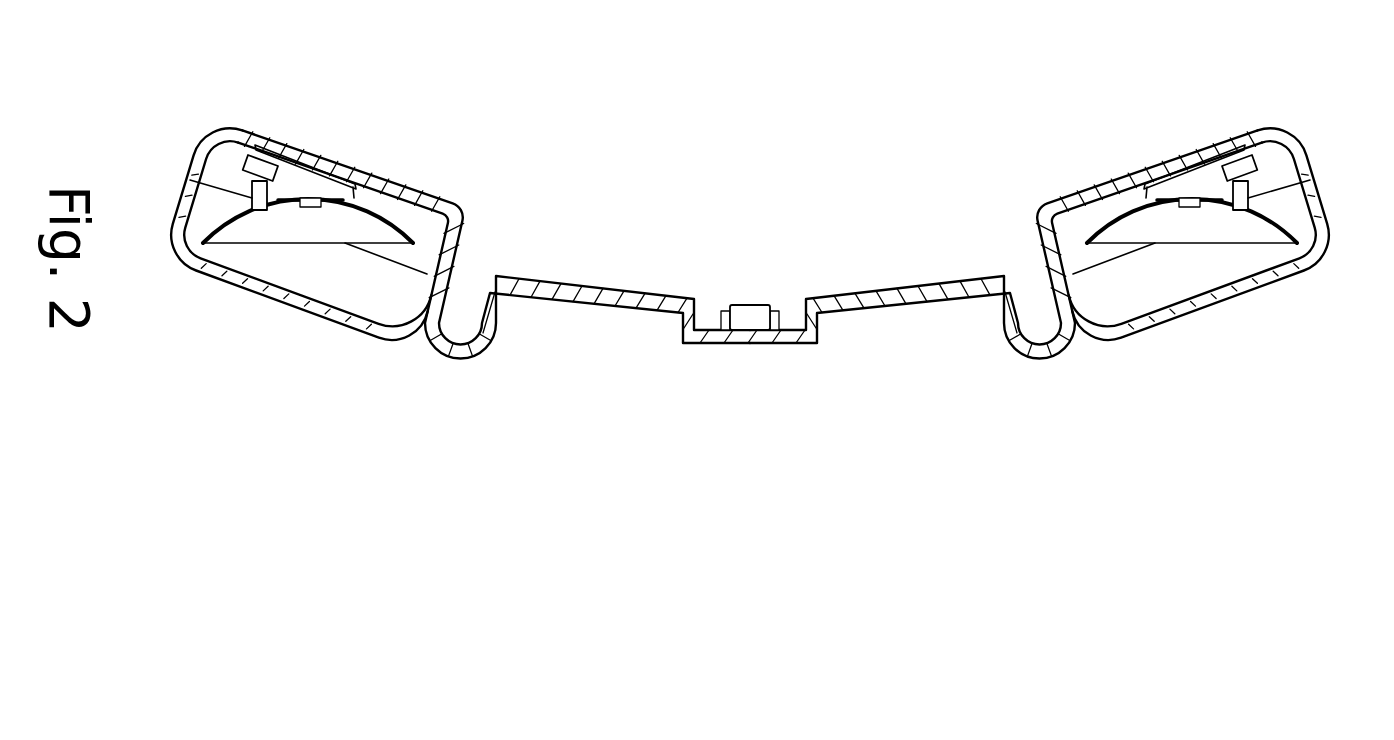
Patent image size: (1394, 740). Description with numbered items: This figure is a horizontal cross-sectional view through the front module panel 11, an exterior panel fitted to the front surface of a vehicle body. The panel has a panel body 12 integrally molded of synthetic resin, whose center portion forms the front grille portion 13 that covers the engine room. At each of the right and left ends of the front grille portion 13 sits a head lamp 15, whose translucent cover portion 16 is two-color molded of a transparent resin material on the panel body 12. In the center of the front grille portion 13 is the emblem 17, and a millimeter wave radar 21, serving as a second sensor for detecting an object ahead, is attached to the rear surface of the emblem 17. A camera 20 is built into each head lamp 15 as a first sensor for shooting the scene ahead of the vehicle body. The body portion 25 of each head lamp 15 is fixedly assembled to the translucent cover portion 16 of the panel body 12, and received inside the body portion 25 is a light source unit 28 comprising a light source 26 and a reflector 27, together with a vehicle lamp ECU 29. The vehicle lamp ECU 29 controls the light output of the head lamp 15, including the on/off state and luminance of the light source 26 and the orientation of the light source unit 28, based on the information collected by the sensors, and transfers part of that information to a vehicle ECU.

The front module panel 11 is at (820, 446).
The panel body 12 is at (452, 362).
The front grille portion 13 is at (876, 292).
The head lamp 15 is at (335, 155).
The translucent cover portion 16 is at (287, 305).
The emblem 17 is at (701, 347).
The camera 20 is at (250, 193).
The millimeter wave radar 21 is at (749, 310).
The body portion 25 is at (442, 198).
The light source 26 is at (308, 208).
The reflector 27 is at (229, 238).
The light source unit 28 is at (384, 200).
The vehicle lamp ECU 29 is at (263, 158).